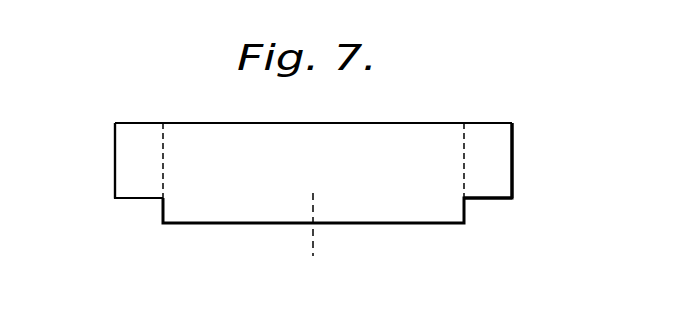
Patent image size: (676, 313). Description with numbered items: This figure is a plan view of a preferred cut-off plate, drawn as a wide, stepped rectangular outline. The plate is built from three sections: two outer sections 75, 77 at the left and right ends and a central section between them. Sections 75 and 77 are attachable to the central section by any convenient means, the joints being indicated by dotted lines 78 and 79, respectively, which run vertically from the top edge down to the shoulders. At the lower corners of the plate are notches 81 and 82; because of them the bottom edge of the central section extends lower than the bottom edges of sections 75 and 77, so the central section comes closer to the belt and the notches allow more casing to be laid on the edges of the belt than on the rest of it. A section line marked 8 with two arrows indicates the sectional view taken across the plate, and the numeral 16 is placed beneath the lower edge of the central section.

The section line 8- 8 is at (258, 178).
The web member 16 is at (223, 207).
The left end portion 75 is at (128, 180).
The right end portion 77 is at (497, 180).
The left transition line 78 is at (165, 148).
The right transition line 79 is at (465, 142).
The left shoulder 81 is at (141, 207).
The right shoulder 82 is at (480, 210).